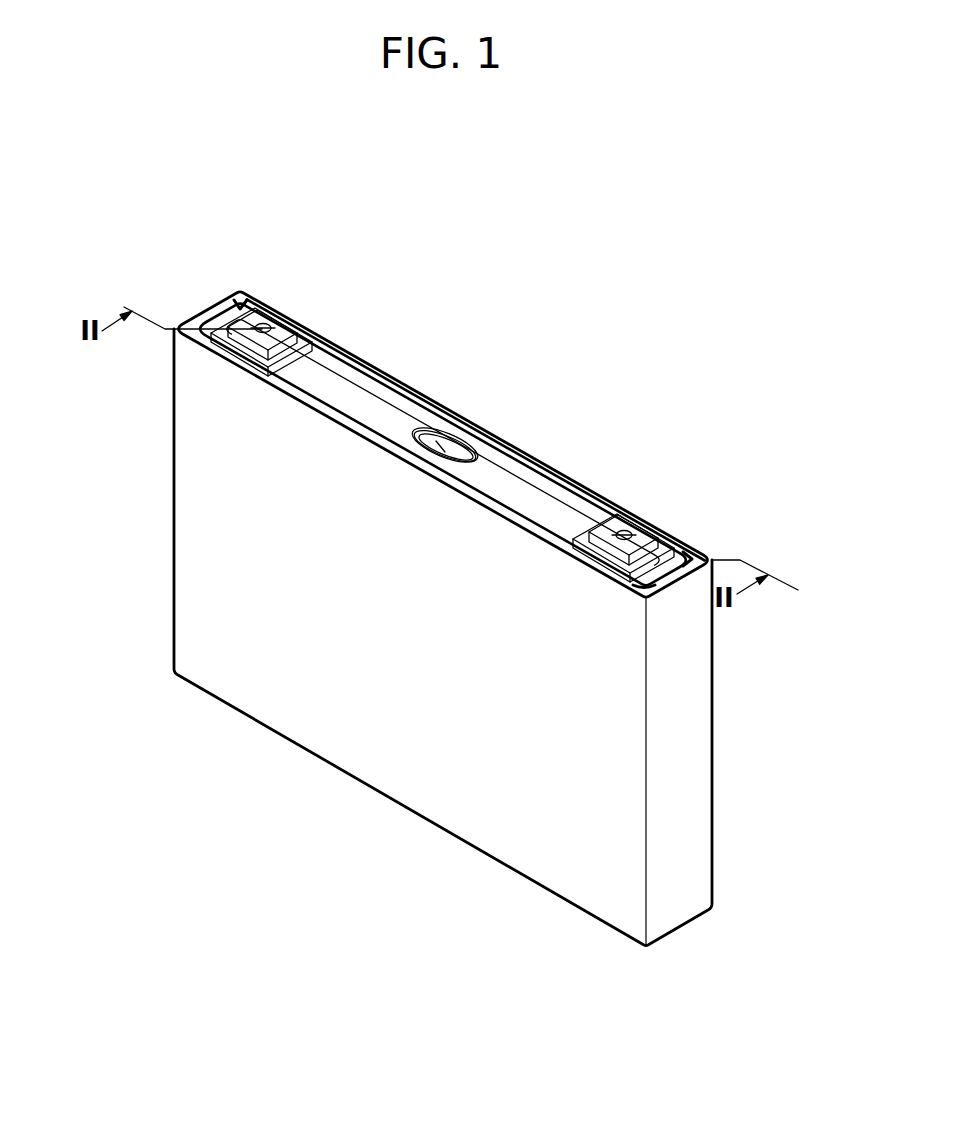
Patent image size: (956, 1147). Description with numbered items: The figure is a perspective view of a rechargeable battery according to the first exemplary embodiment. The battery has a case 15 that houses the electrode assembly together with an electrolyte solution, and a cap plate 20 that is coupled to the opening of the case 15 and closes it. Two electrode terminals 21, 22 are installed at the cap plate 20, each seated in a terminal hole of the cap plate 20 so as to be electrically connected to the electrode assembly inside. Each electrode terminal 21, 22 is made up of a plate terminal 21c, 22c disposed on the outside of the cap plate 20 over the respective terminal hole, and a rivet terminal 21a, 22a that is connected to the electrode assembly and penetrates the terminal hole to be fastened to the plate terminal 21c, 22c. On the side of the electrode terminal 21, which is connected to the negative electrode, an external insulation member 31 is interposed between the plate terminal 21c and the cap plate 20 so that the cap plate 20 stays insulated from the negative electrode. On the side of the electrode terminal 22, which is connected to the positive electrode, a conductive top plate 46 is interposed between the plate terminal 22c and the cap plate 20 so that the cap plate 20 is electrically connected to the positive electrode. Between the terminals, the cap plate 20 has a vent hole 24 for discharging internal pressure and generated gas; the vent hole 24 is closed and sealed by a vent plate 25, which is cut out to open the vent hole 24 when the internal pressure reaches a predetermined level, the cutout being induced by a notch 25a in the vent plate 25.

The case 15 is at (382, 752).
The cap plate 20 is at (358, 380).
The electrode terminal 21 is at (251, 298).
The rivet terminal 21a is at (264, 322).
The plate terminal 21c is at (285, 332).
The electrode terminal 22 is at (654, 501).
The rivet terminal 22a is at (625, 530).
The plate terminal 22c is at (646, 545).
The vent hole 24 is at (428, 432).
The vent plate 25 is at (452, 442).
The notch 25a is at (468, 447).
The external insulation member 31 is at (220, 327).
The conductive top plate 46 is at (673, 551).